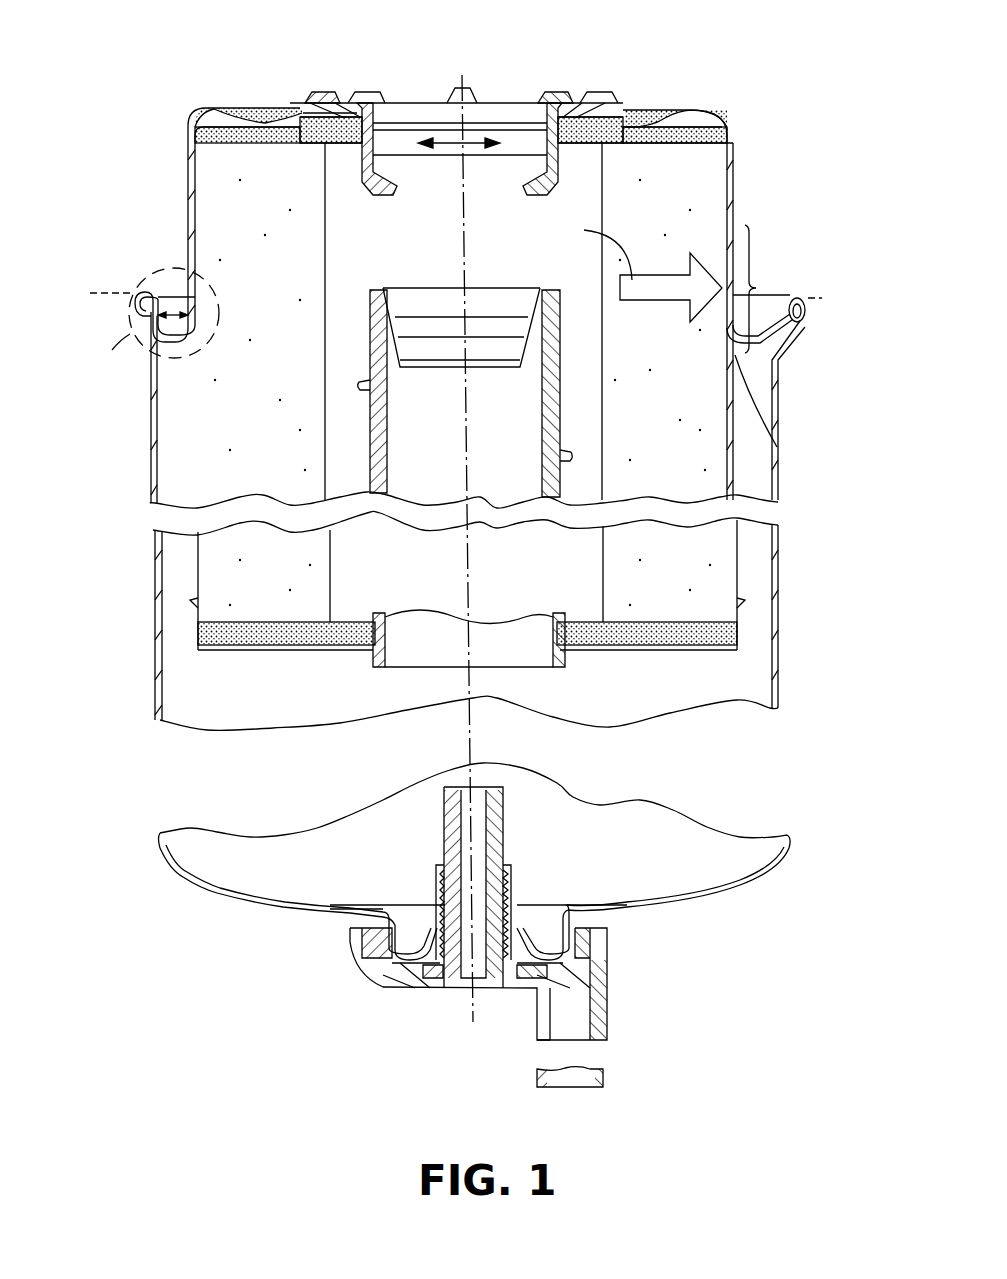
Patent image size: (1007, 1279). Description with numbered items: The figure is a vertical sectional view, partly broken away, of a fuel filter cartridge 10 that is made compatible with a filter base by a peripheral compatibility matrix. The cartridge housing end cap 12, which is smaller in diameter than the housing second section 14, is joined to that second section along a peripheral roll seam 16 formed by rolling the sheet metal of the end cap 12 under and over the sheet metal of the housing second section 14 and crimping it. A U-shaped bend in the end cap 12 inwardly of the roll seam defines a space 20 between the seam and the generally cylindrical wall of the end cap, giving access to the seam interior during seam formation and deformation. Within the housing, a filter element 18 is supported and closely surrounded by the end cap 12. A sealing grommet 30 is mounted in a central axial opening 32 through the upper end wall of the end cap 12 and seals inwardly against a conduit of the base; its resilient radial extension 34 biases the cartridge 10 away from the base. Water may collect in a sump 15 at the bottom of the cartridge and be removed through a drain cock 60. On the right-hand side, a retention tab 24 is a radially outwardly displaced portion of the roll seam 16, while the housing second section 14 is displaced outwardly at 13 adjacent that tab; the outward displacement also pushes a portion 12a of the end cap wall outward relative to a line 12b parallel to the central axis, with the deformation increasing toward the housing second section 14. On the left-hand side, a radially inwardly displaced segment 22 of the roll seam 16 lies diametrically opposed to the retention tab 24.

The filter cartridge 10 is at (229, 84).
The cartridge housing end cap 12 is at (735, 167).
The outwardly displaced portion of end cap wall 12a is at (774, 289).
The line parallel to central axis 12b is at (777, 447).
The outwardly displaced portion of housing second section 13 is at (780, 350).
The housing second section 14 is at (779, 640).
The sump 15 is at (583, 881).
The peripheral roll seam 16 is at (805, 322).
The filter element 18 is at (230, 563).
The space 20 is at (170, 300).
The radially inwardly displaced segment 22 is at (132, 306).
The retention tab 24 is at (805, 297).
The sealing grommet 30 is at (557, 92).
The central axial opening 32 is at (445, 180).
The resilient radial extension 34 is at (320, 98).
The drain cock 60 is at (374, 981).